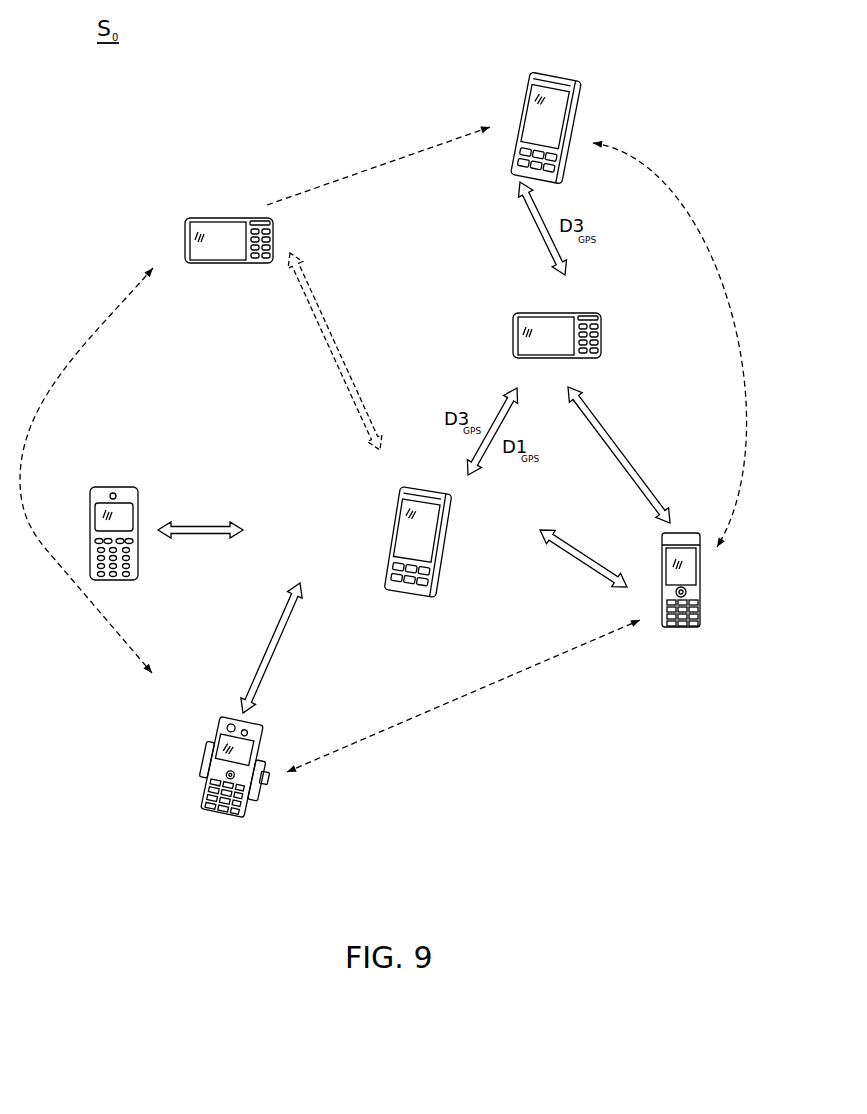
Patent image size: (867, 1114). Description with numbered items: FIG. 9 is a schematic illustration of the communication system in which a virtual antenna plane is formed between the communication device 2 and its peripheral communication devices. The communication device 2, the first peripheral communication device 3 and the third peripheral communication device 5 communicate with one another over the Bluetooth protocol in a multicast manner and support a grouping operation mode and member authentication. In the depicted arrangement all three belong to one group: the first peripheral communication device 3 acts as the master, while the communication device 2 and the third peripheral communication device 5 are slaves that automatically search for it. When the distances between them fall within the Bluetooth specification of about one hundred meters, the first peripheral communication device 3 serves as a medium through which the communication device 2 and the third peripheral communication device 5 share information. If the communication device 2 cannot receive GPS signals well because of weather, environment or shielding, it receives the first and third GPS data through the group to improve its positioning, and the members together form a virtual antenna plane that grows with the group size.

The communication device 2 is at (448, 548).
The first peripheral communication device 3 is at (603, 340).
The third peripheral communication device 5 is at (576, 110).